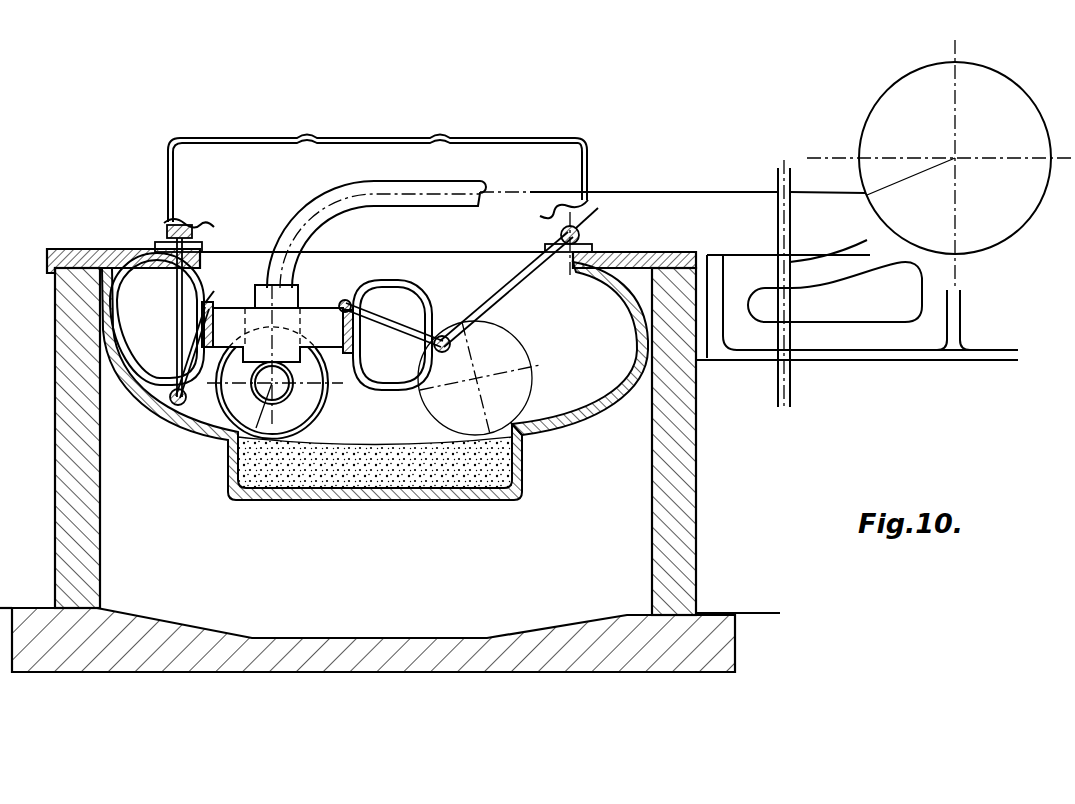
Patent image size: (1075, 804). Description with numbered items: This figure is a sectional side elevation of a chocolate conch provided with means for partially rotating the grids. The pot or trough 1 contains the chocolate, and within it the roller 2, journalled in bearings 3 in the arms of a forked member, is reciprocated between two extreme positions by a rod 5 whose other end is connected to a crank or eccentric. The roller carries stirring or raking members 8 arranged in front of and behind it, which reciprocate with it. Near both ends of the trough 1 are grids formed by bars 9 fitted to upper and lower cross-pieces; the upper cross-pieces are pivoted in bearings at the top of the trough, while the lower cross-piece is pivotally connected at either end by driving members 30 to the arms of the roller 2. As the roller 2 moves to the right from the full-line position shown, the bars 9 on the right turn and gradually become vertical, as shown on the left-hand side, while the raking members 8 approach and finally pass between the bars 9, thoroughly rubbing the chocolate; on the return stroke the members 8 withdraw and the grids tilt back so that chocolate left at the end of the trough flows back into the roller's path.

The pot or trough 1 is at (533, 348).
The roller 2 is at (318, 412).
The bearings 3 is at (228, 440).
The rod 5 is at (446, 196).
The stirring or raking members 8 is at (372, 378).
The bars 9 is at (177, 320).
The driving members 30 is at (374, 328).